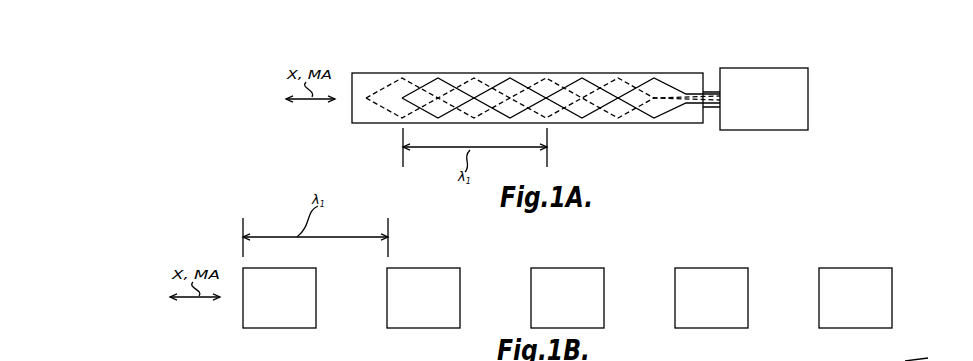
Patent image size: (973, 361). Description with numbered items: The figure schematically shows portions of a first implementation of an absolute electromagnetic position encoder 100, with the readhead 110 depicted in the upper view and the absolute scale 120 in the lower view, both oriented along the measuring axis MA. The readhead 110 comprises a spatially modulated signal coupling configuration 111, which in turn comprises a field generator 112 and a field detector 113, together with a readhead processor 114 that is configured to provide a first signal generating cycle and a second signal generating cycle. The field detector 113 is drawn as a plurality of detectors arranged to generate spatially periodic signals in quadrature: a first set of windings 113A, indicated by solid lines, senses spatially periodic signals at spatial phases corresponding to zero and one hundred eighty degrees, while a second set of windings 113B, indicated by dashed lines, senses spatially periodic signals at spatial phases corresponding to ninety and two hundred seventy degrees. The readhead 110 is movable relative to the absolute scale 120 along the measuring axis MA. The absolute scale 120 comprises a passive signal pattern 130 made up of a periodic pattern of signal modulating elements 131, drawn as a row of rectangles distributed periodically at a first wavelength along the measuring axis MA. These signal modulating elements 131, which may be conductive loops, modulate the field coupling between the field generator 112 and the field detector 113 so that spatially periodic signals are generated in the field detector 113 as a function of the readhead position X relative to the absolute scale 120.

In FIG. 1A, the absolute electromagnetic position encoder 100 is at (845, 40).
In FIG. 1B, the absolute electromagnetic position encoder 100 is at (867, 233).
In FIG. 1A, the readhead 110 is at (818, 68).
In FIG. 1A, the spatially modulated signal coupling configuration 111 is at (521, 22).
In FIG. 1A, the field generator 112 is at (424, 73).
In FIG. 1A, the field detector 113 is at (485, 41).
In FIG. 1A, the first set of windings 113A is at (432, 80).
In FIG. 1A, the second set of windings 113B is at (460, 87).
In FIG. 1A, the readhead processor 114 is at (745, 130).
In FIG. 1B, the absolute scale 120 is at (898, 297).
In FIG. 1B, the passive signal pattern 130 is at (778, 263).
In FIG. 1B, the signal modulating elements 131 is at (567, 298).